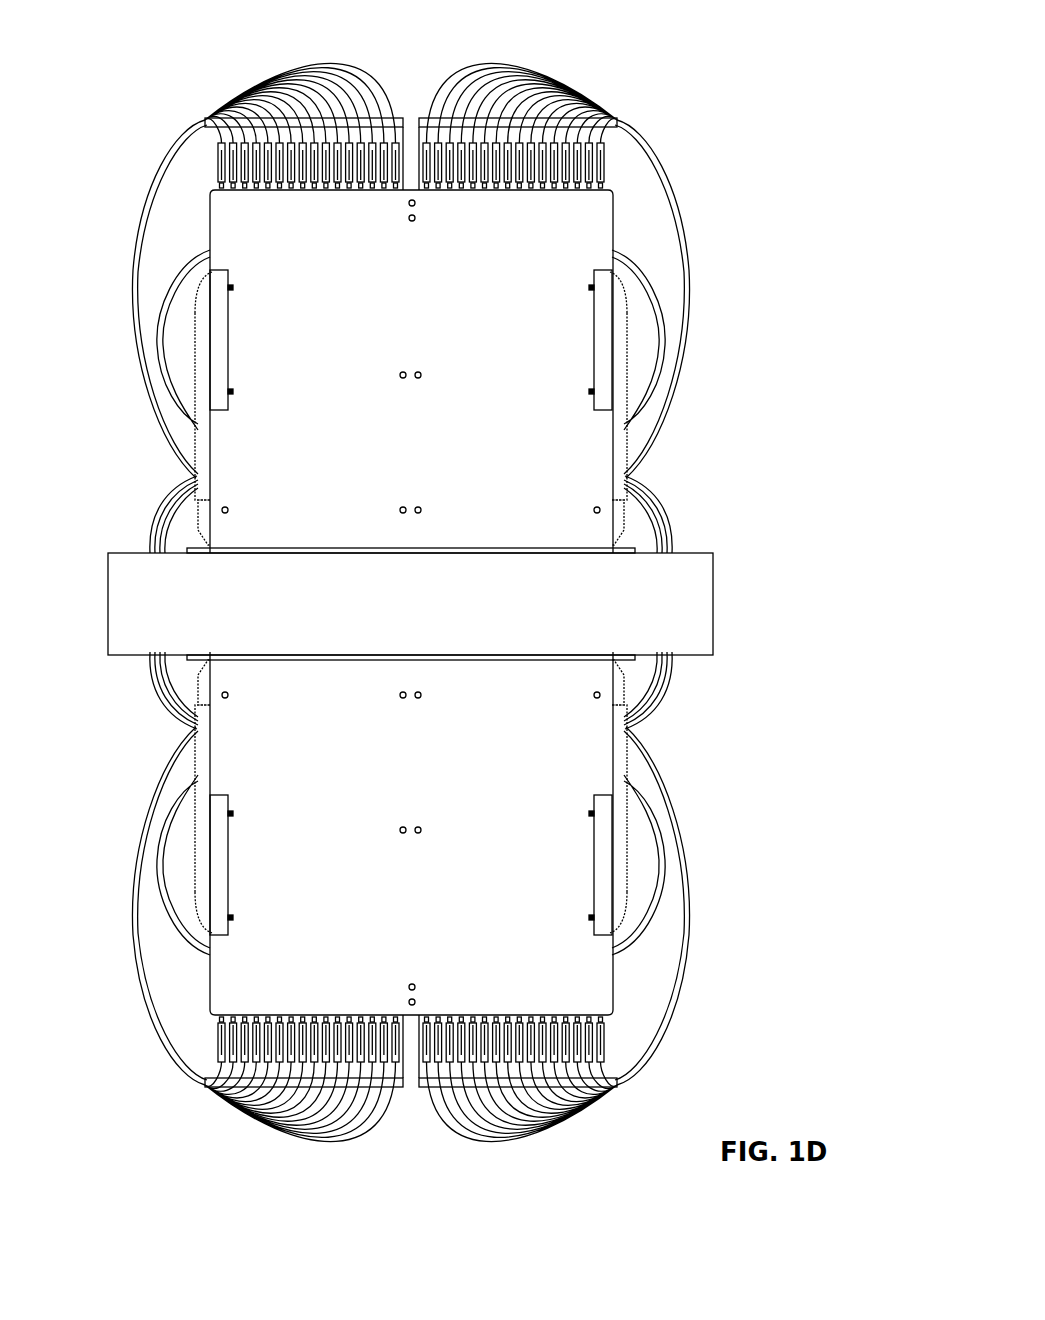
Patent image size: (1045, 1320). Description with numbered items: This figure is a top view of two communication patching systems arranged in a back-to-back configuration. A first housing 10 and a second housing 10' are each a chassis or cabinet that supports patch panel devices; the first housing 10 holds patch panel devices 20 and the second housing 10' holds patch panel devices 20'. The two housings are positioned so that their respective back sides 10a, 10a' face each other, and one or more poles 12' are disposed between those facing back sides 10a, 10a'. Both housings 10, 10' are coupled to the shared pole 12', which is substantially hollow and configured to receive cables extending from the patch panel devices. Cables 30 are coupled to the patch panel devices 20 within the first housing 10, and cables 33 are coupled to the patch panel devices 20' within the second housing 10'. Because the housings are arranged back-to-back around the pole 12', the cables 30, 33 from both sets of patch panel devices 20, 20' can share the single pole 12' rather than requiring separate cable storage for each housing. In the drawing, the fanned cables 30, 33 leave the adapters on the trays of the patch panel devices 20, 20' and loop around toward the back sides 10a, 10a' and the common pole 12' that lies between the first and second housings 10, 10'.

The housing 10 is at (471, 869).
The second housing 10' is at (463, 335).
The back side 10a is at (411, 690).
The back side of second housing 10a' is at (411, 514).
The pole 12' is at (409, 604).
The patch panel device 20 is at (417, 1119).
The patch panel device of second housing 20' is at (411, 84).
The cables 30 is at (690, 852).
The cables of second housing 33 is at (665, 360).